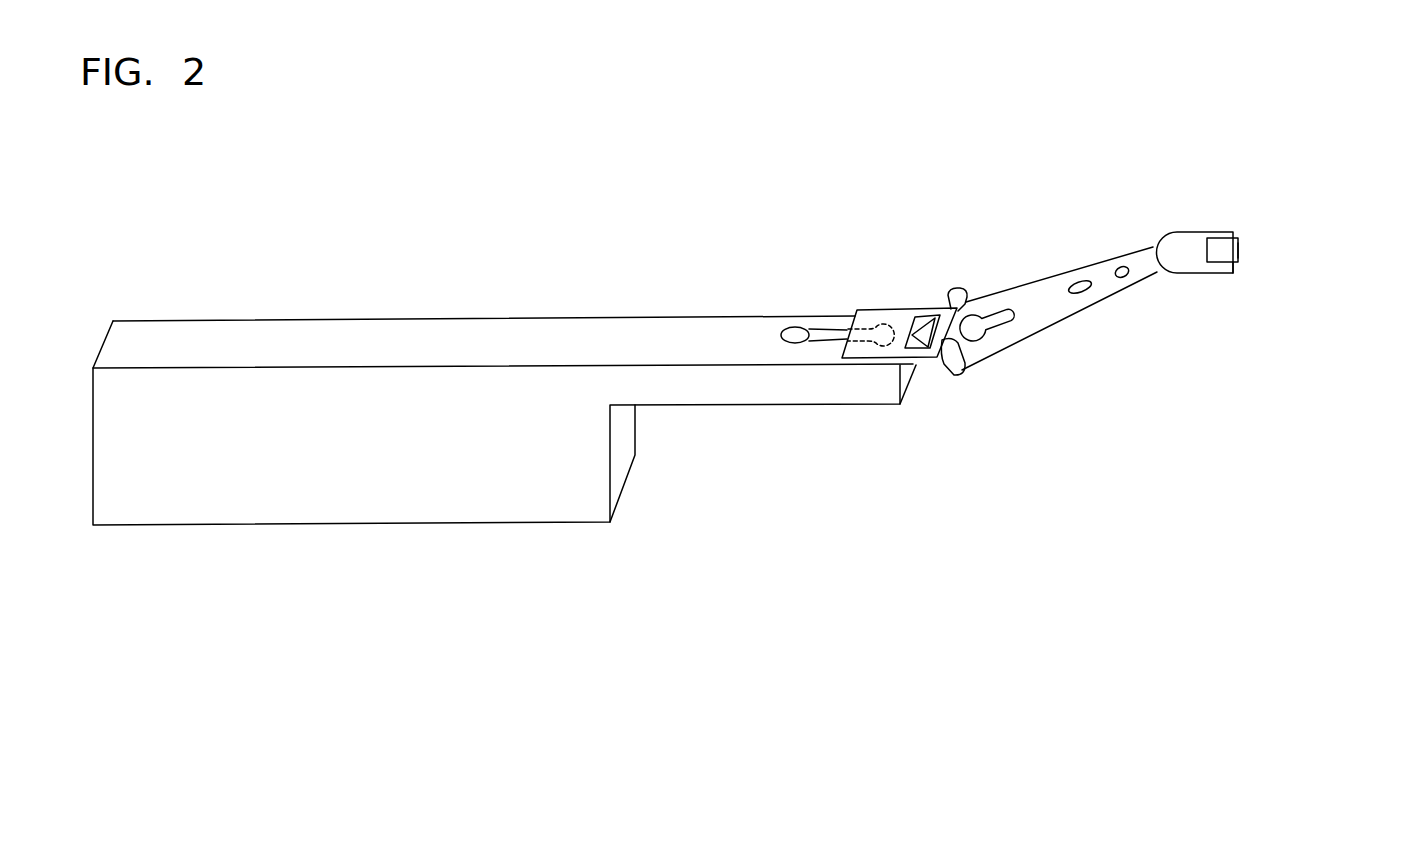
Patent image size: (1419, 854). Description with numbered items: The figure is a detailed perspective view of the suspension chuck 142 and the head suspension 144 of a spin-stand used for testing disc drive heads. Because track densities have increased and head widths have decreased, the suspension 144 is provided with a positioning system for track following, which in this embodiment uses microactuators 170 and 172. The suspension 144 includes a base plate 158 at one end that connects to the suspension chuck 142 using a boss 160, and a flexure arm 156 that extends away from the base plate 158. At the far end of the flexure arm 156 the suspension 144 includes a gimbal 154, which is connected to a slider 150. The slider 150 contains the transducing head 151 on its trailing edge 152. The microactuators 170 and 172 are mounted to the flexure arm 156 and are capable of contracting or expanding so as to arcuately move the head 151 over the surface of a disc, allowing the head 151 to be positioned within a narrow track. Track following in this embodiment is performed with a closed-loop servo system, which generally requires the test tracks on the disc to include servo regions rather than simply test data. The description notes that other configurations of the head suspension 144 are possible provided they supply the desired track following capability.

The suspension chuck 142 is at (342, 321).
The suspension 144 is at (1040, 196).
The slider 150 is at (1215, 245).
The transducing head 151 is at (1238, 243).
The trailing edge 152 is at (1262, 288).
The gimbal 154 is at (1178, 232).
The flexure arm 156 is at (1034, 330).
The base plate 158 is at (868, 318).
The boss 160 is at (880, 330).
The microactuator 170 is at (971, 296).
The microactuator 172 is at (947, 347).